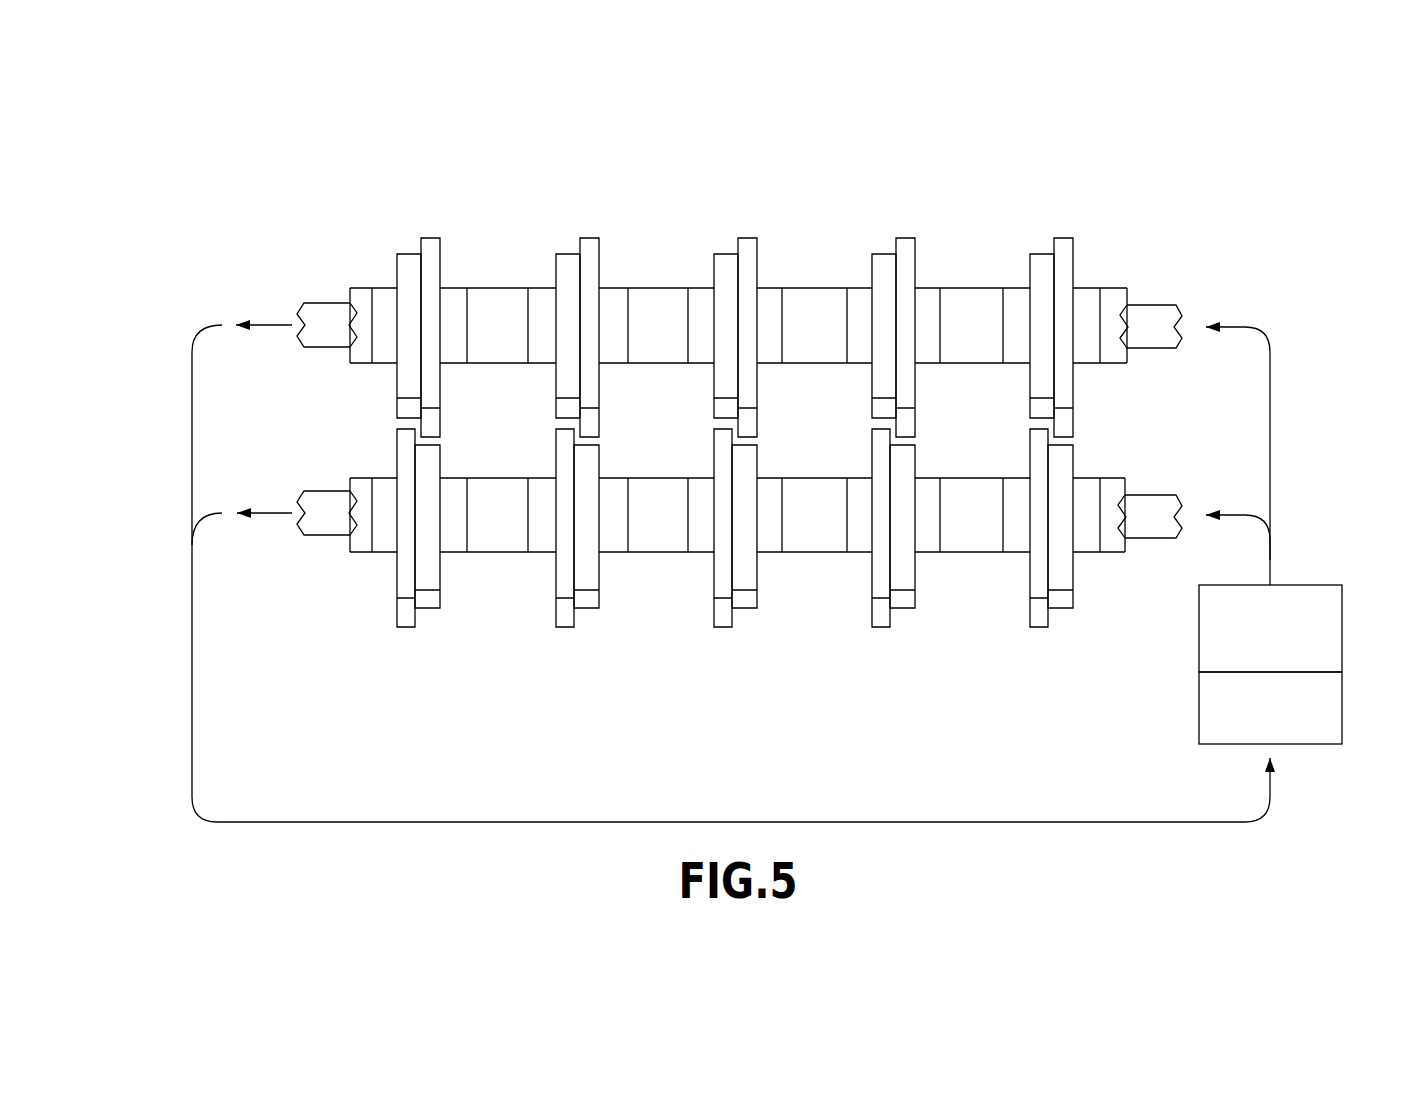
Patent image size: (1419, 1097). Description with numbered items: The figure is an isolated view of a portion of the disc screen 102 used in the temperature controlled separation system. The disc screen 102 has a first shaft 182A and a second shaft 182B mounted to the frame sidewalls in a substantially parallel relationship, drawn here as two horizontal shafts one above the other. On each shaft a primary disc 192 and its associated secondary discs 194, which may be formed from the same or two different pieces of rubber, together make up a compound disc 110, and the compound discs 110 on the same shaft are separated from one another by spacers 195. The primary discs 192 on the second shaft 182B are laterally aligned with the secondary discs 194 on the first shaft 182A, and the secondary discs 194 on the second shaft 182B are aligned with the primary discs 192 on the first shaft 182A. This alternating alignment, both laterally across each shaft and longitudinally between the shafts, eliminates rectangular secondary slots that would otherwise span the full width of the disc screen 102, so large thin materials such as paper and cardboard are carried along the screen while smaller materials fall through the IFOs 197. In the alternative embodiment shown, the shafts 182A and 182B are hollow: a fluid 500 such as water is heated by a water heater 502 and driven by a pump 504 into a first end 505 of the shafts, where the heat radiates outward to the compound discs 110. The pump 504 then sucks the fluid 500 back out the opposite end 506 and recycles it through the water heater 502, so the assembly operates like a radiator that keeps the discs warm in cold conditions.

The disc screen 102 is at (745, 418).
The compound disc 110 is at (745, 418).
The first shaft 182A is at (310, 303).
The second shaft 182B is at (320, 490).
The primary disc 192 is at (441, 250).
The secondary disc 194 is at (398, 264).
The spacer 195 is at (505, 288).
The IFO 197 is at (669, 398).
The fluid 500 is at (192, 402).
The water heater 502 is at (1342, 633).
The pump 504 is at (1342, 703).
The first end 505 is at (1183, 322).
The opposite end 506 is at (295, 348).